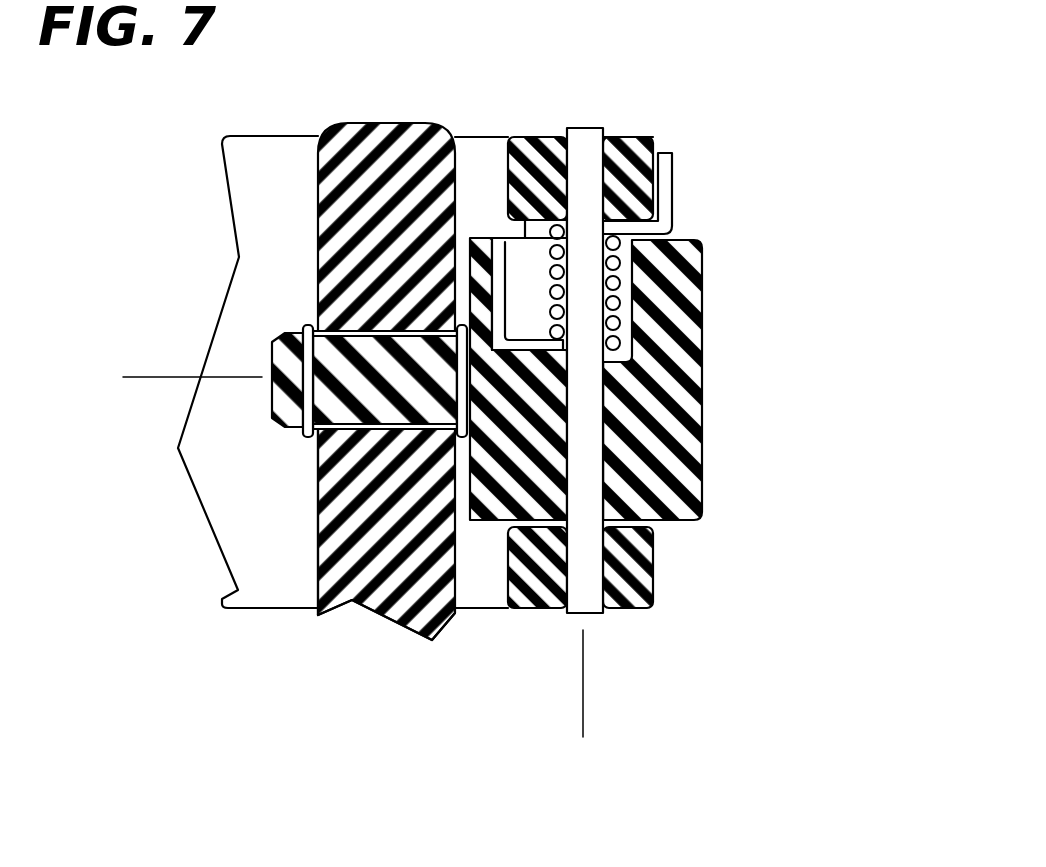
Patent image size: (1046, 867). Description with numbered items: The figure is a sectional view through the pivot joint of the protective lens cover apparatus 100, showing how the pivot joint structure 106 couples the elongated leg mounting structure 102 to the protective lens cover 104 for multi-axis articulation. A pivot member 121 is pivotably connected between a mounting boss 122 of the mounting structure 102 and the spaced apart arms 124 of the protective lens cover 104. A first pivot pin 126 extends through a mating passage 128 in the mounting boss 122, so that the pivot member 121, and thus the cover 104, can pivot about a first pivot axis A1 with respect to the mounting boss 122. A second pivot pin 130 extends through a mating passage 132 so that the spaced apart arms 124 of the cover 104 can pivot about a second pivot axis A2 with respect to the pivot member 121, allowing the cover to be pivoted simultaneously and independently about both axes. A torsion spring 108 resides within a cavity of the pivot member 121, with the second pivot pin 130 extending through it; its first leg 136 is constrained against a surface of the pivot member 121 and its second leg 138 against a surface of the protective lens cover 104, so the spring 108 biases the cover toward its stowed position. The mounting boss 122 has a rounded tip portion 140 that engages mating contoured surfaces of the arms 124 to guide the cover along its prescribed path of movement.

The protective lens cover apparatus 100 is at (718, 99).
The elongated leg mounting structure 102 is at (397, 617).
The protective lens cover 104 is at (213, 532).
The pivot joint structure 106 is at (657, 142).
The spring 108 is at (622, 302).
The pivot member 121 is at (690, 378).
The mounting boss 122 is at (318, 485).
The spaced apart arms 124 is at (533, 137).
The first pivot pin 126 is at (273, 350).
The mating passage 128 is at (323, 323).
The second pivot pin 130 is at (578, 603).
The mating passage 132 is at (608, 488).
The first leg 136 is at (505, 260).
The second leg 138 is at (673, 202).
The tip portion 140 is at (368, 123).
The first pivot axis A1 is at (160, 377).
The second pivot axis A2 is at (583, 688).